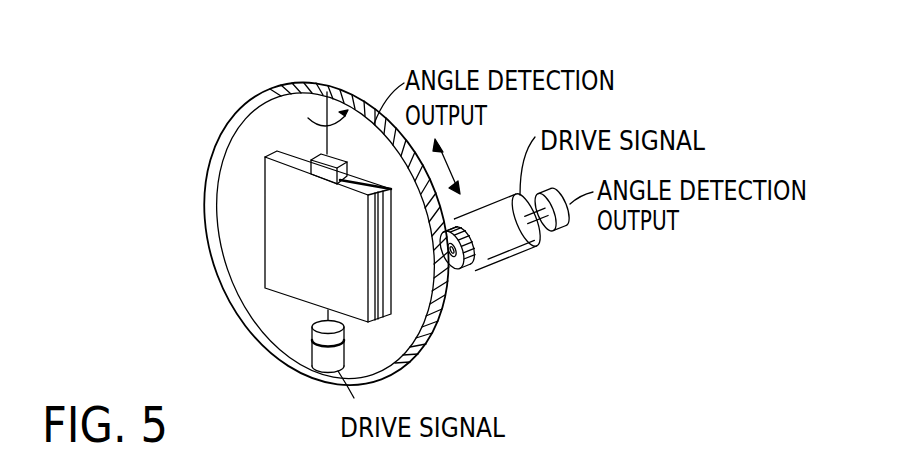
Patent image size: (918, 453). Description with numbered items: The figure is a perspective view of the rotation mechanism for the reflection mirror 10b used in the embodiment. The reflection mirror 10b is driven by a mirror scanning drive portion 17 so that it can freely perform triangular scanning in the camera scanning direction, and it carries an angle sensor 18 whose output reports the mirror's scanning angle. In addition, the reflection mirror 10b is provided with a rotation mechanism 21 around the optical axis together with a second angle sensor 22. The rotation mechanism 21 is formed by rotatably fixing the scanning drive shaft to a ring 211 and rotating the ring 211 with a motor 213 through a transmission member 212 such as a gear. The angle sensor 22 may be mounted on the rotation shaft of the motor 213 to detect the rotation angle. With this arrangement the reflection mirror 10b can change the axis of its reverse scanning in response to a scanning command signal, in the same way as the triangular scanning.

The reflection mirror 10b is at (263, 200).
The mirror scanning drive portion 17 is at (323, 355).
The angle sensor 18 is at (313, 158).
The rotation mechanism 21 is at (516, 292).
The ring 211 is at (434, 339).
The transmission member 212 is at (452, 270).
The motor 213 is at (505, 252).
The angle sensor 22 is at (561, 237).